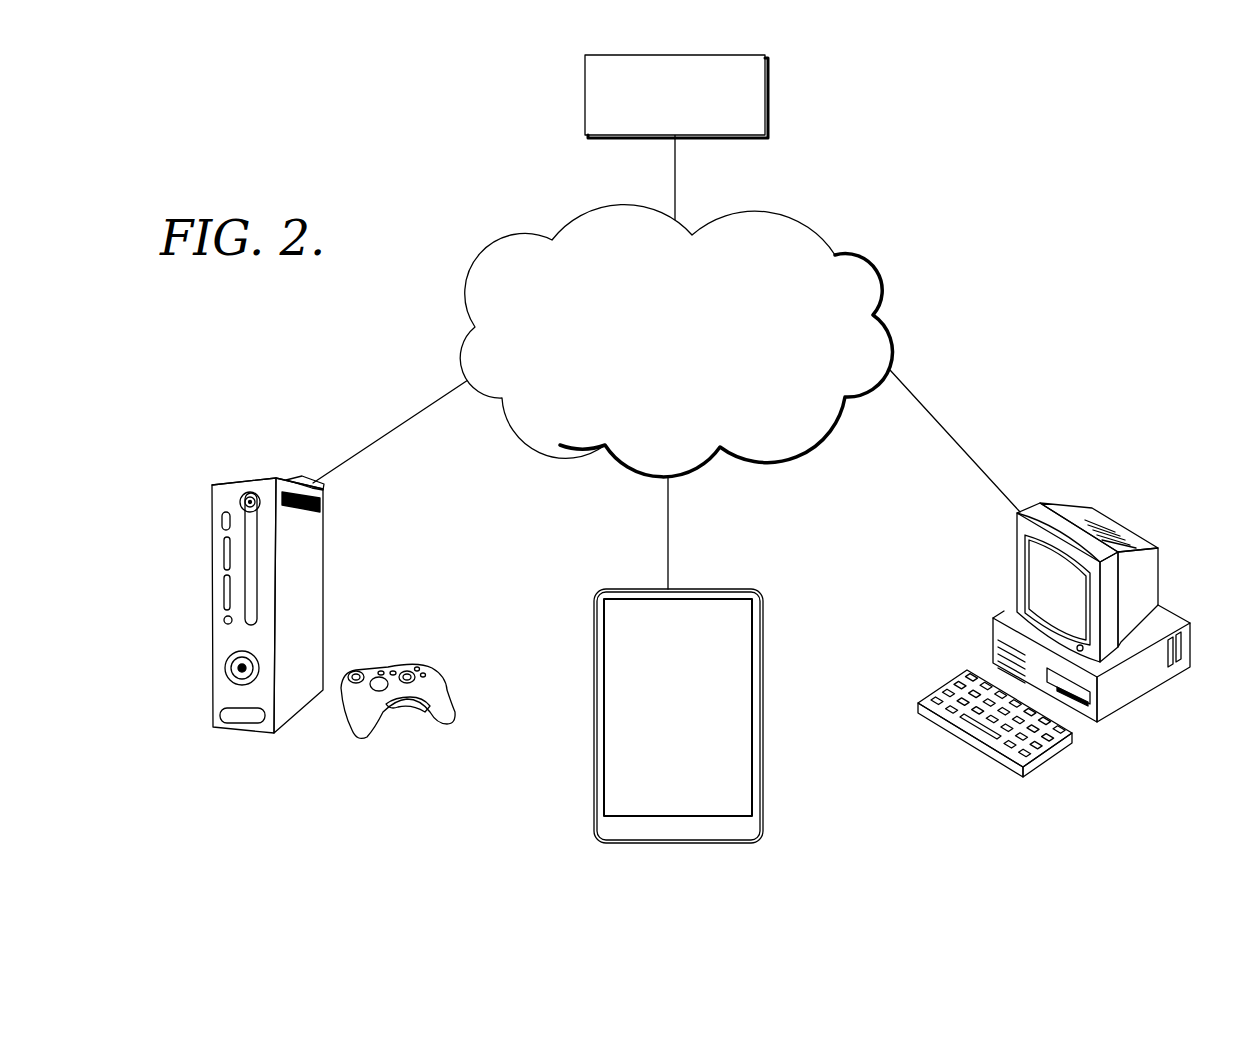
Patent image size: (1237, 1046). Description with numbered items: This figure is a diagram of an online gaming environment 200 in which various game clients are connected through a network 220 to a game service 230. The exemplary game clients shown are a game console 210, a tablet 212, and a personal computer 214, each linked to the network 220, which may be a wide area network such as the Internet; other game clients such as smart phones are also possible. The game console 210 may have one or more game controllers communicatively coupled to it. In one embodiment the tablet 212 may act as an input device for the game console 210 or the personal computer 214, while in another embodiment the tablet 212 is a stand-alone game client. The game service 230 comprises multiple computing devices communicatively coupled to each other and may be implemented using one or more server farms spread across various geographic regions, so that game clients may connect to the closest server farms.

The online gaming environment 200 is at (966, 164).
The game console 210 is at (323, 532).
The tablet 212 is at (762, 703).
The personal computer 214 is at (1120, 523).
The network 220 is at (760, 210).
The game service 230 is at (720, 53).